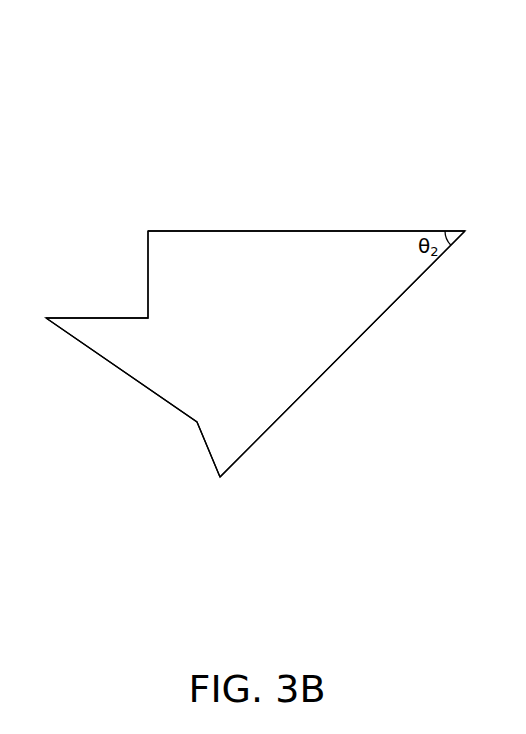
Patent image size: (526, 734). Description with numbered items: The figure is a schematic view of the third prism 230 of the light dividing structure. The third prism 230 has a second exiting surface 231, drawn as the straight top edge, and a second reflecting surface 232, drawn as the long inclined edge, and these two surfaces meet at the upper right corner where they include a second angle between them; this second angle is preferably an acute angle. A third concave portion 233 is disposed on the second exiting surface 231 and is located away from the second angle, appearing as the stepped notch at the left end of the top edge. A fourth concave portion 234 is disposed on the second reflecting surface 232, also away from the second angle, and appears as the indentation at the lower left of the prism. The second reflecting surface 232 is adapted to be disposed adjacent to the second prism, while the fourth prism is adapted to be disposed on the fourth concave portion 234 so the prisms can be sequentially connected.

The third prism 230 is at (91, 44).
The second exiting surface 231 is at (383, 231).
The second reflecting surface 232 is at (362, 336).
The third concave portion 233 is at (103, 308).
The fourth concave portion 234 is at (182, 435).